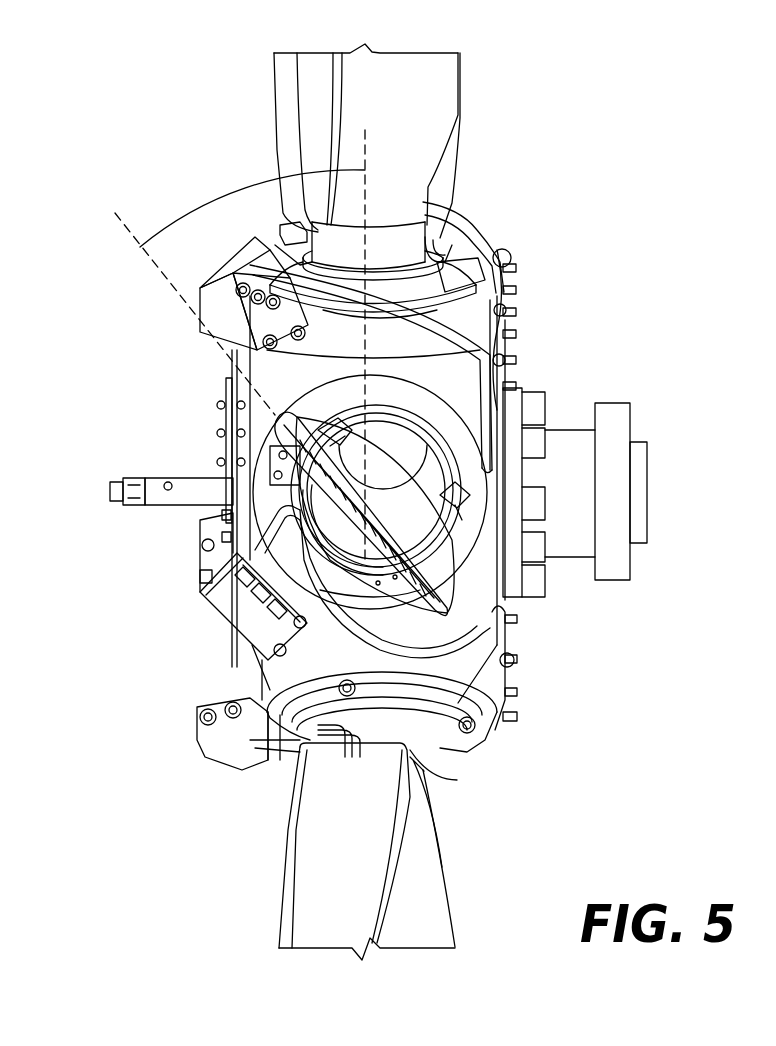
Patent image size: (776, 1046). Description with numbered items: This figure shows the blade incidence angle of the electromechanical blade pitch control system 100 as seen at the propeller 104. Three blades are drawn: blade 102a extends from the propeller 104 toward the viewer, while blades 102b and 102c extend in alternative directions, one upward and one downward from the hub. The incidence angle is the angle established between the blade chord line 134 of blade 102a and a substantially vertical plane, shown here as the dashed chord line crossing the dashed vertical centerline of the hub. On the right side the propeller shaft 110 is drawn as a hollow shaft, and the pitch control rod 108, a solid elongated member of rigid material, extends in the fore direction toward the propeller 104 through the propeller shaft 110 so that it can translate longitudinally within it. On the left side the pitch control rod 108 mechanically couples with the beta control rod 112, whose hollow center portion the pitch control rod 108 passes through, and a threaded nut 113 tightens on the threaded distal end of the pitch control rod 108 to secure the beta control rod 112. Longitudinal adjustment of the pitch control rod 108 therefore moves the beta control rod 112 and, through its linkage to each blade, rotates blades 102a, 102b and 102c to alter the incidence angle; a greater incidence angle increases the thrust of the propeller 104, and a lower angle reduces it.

The electromechanical blade pitch control system 100 is at (641, 718).
The blade 102a is at (412, 553).
The blade 102b is at (396, 96).
The blade 102c is at (393, 884).
The propeller 104 is at (357, 491).
The pitch control rod 108 is at (112, 491).
The propeller shaft 110 is at (567, 430).
The beta control rod 112 is at (160, 505).
The threaded nut 113 is at (137, 483).
The blade chord line 134 is at (162, 277).